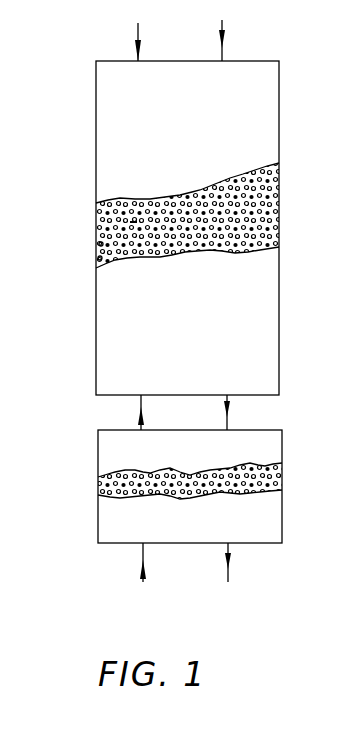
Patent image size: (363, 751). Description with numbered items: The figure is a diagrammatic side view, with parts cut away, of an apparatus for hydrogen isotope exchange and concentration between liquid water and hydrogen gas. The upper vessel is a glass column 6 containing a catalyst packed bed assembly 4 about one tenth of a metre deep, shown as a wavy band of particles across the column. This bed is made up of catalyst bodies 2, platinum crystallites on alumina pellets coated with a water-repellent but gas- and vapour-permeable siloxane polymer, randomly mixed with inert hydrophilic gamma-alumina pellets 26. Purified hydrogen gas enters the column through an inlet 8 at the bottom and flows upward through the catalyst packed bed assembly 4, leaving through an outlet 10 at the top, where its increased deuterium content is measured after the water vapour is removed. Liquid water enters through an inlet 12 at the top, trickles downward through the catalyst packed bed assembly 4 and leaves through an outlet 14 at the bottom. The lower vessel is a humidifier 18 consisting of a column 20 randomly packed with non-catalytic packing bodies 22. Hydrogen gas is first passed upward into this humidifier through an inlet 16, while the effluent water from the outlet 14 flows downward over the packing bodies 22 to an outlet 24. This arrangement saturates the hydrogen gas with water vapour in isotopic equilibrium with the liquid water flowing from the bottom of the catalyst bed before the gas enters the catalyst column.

The catalyst bodies 2 is at (273, 208).
The catalyst packed bed assembly 4 is at (130, 222).
The glass column 6 is at (280, 127).
The inlet 8 is at (140, 402).
The outlet 10 is at (136, 57).
The inlet 12 is at (224, 49).
The outlet 14 is at (229, 421).
The inlet 16 is at (141, 552).
The humidifier 18 is at (262, 450).
The column 20 is at (120, 455).
The non-catalytic packing bodies 22 is at (99, 479).
The outlet 24 is at (230, 552).
The pellets 26 is at (100, 244).